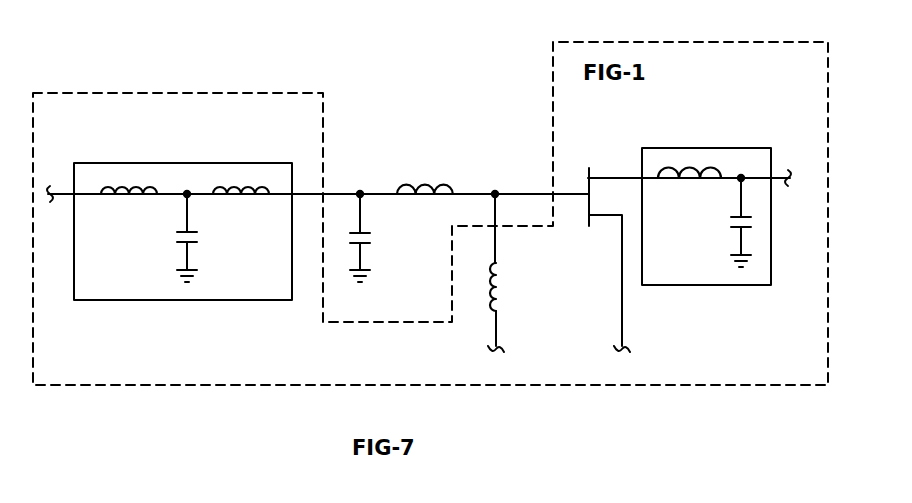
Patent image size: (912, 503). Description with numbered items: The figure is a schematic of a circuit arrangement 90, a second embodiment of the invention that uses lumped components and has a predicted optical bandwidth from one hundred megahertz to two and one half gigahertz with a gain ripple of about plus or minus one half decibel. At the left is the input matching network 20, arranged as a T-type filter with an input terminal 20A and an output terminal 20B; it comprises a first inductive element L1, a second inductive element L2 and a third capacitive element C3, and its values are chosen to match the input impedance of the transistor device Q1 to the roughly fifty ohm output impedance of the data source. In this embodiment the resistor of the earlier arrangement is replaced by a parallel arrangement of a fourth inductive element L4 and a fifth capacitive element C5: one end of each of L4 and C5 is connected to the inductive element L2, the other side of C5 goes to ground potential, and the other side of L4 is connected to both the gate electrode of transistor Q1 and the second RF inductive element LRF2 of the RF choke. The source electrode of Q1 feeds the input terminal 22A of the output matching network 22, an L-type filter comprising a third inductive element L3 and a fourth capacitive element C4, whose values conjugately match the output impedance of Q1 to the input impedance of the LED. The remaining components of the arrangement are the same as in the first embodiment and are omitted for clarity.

The circuit arrangement 90 is at (441, 106).
The input matching network 20 is at (163, 163).
The input terminal 20A is at (85, 198).
The output terminal 20B is at (280, 198).
The first inductive element L1 is at (105, 190).
The second inductive element L2 is at (268, 190).
The third capacitive element C3 is at (185, 243).
The fourth inductive element L4 is at (428, 190).
The fifth capacitive element C5 is at (366, 243).
The second RF inductive element LRF2 is at (500, 266).
The transistor device Q1 is at (590, 168).
The output matching network 22 is at (731, 148).
The input terminal 22A is at (658, 178).
The third inductive element L3 is at (704, 181).
The fourth capacitive element C4 is at (740, 229).